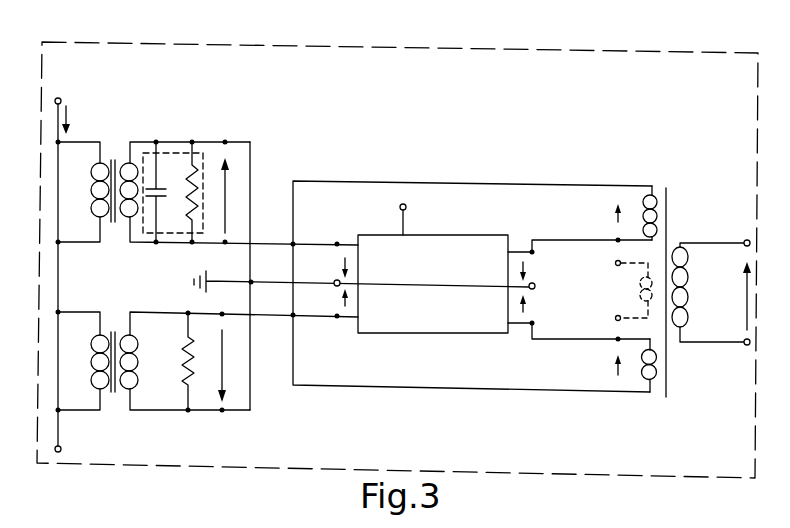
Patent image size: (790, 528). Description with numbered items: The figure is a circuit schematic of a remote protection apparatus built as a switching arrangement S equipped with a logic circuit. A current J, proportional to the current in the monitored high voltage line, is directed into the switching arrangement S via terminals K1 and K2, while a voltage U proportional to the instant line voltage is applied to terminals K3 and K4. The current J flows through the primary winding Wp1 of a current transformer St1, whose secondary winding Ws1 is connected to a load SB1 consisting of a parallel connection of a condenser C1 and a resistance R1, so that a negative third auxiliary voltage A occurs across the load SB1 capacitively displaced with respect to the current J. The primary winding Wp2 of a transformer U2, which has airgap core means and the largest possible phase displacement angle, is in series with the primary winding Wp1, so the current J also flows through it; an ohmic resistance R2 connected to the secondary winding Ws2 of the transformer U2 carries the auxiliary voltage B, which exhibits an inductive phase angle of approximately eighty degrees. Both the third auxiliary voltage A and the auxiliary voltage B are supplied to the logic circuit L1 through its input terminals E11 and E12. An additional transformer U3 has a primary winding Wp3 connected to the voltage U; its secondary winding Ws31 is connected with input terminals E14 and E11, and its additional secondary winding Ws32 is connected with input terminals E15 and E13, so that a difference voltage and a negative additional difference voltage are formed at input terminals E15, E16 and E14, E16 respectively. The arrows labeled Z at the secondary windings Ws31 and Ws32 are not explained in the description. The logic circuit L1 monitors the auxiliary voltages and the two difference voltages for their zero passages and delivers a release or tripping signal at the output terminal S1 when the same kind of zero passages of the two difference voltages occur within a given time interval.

The switching arrangement S is at (421, 47).
The terminal K1 is at (55, 87).
The terminal K2 is at (70, 447).
The current J is at (72, 120).
The primary winding Wp1 is at (96, 206).
The current transformer St1 is at (115, 160).
The secondary winding Ws1 is at (115, 222).
The load SB1 is at (183, 152).
The condenser C1 is at (161, 192).
The resistance R1 is at (186, 212).
The voltage - A is at (235, 192).
The primary winding Wp2 is at (96, 375).
The transformer U2 is at (115, 392).
The secondary winding Ws2 is at (130, 322).
The ohmic resistance R2 is at (186, 371).
The auxiliary voltage B is at (229, 362).
The input terminal E11 is at (337, 244).
The input terminal E12 is at (337, 282).
The input terminal E13 is at (337, 319).
The logic circuit L1 is at (453, 253).
The output terminal S1 is at (413, 213).
The input terminal E14 is at (531, 252).
The input terminal E15 is at (540, 321).
The input terminal E16 is at (535, 286).
The secondary winding Ws31 is at (657, 194).
The additional secondary winding Ws32 is at (655, 388).
The additional transformer U3 is at (667, 204).
The winding current Z is at (625, 292).
The primary winding Wp3 is at (689, 300).
The terminal K3 is at (742, 229).
The terminal K4 is at (739, 358).
The voltage U is at (742, 296).